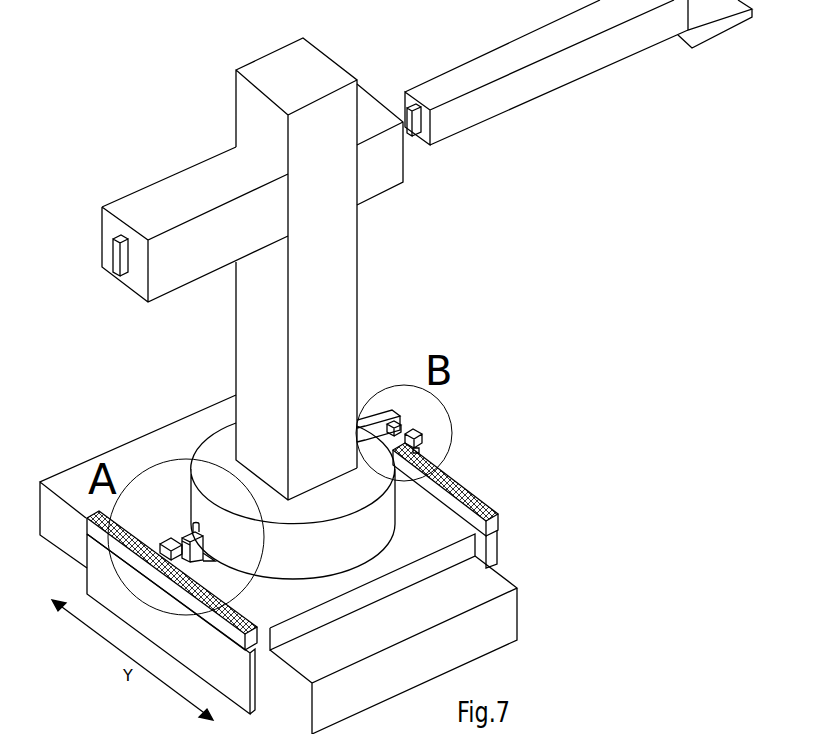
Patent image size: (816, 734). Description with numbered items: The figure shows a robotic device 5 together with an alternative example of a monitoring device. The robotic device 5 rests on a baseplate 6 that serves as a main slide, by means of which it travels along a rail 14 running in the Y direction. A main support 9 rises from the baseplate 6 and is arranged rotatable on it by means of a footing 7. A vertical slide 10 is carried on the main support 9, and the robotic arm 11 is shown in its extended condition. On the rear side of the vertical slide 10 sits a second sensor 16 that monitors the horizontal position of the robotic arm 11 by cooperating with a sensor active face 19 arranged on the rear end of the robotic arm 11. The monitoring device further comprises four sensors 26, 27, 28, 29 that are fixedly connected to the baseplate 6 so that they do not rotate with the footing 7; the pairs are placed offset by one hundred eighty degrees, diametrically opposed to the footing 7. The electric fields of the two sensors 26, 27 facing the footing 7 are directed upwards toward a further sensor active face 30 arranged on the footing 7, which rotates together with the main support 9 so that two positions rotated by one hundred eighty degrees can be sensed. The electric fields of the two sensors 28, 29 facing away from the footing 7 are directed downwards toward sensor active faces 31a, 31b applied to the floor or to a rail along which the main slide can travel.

The robotic device 5 is at (403, 269).
The baseplate 6 is at (398, 583).
The footing 7 is at (384, 524).
The main support 9 is at (338, 300).
The vertical slide 10 is at (191, 142).
The robotic arm 11 is at (572, 72).
The rail 14 is at (502, 620).
The second sensor 16 is at (116, 276).
The sensor active face 19 is at (417, 132).
The sensor 26 is at (392, 439).
The sensor 27 is at (201, 527).
The sensor 28 is at (420, 447).
The sensor 29 is at (170, 562).
The sensor active face 30 is at (400, 427).
The sensor active face 31a is at (472, 493).
The sensor active face 31b is at (240, 614).